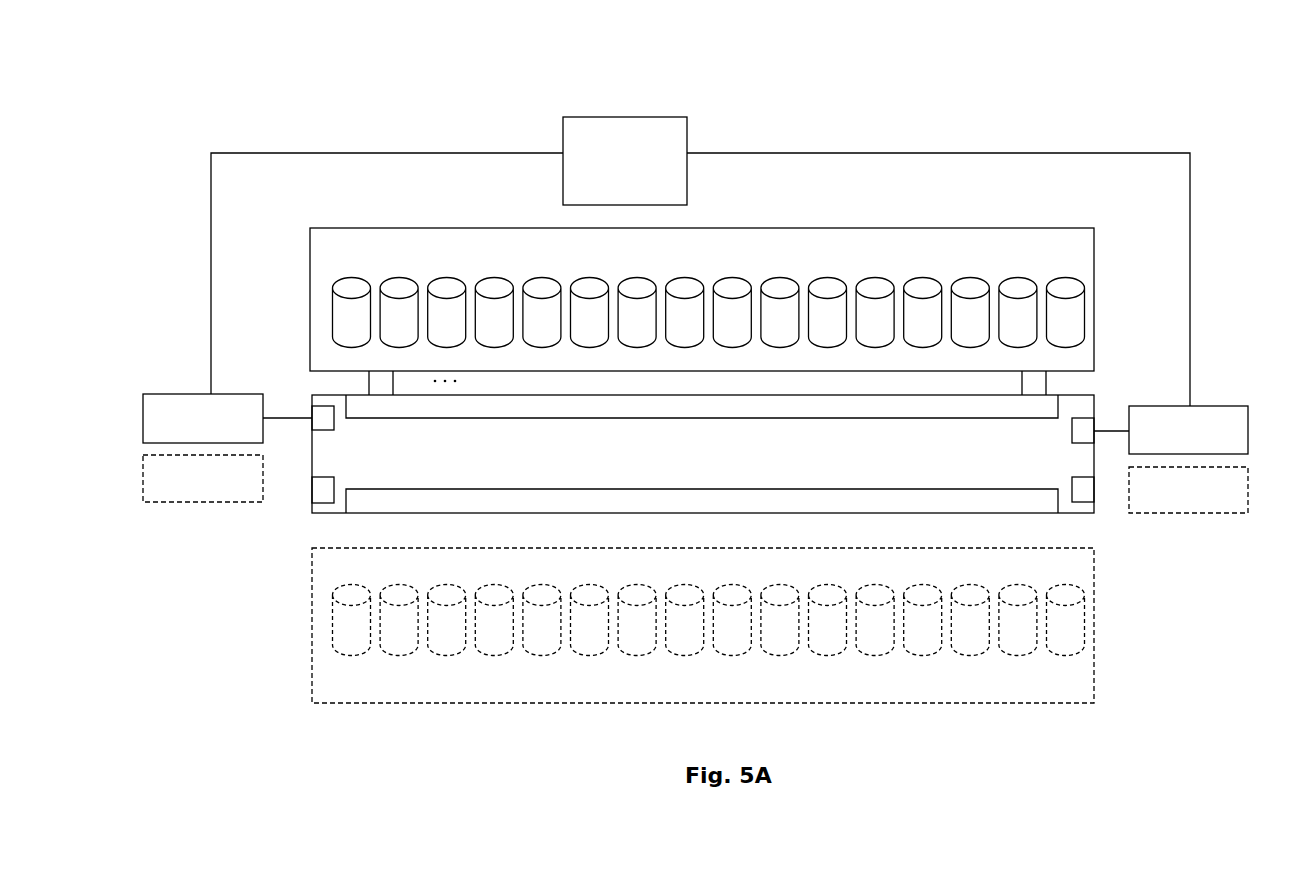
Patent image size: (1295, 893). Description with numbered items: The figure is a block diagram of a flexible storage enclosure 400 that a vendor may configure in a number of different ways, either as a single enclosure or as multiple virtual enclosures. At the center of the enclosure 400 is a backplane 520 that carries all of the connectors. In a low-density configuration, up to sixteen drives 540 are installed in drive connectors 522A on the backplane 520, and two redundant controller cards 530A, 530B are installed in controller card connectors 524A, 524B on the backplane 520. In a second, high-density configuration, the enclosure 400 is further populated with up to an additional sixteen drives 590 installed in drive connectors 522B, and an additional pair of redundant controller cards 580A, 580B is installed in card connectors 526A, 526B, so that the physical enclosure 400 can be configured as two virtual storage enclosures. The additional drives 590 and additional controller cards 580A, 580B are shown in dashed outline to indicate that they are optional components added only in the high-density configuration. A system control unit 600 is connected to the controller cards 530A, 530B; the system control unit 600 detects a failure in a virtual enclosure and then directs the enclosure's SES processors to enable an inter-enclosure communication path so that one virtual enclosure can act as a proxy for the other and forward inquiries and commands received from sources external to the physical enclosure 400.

The enclosure 400 is at (290, 104).
The system control unit 600 is at (688, 132).
The drives 540 is at (702, 311).
The additional drives 590 is at (703, 625).
The backplane 520 is at (703, 454).
The drive connectors 522A is at (653, 418).
The drive connectors 522B is at (798, 489).
The controller card connector 524A is at (323, 418).
The controller card connector 524B is at (1082, 430).
The card connector 526A is at (325, 490).
The card connector 526B is at (1082, 490).
The redundant controller card 530A is at (172, 393).
The redundant controller card 530B is at (1208, 405).
The additional redundant controller card 580A is at (203, 503).
The additional redundant controller card 580B is at (1224, 515).